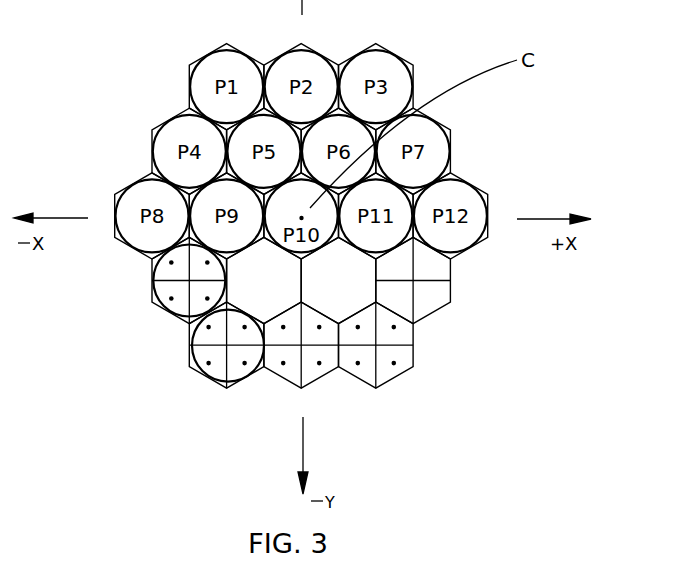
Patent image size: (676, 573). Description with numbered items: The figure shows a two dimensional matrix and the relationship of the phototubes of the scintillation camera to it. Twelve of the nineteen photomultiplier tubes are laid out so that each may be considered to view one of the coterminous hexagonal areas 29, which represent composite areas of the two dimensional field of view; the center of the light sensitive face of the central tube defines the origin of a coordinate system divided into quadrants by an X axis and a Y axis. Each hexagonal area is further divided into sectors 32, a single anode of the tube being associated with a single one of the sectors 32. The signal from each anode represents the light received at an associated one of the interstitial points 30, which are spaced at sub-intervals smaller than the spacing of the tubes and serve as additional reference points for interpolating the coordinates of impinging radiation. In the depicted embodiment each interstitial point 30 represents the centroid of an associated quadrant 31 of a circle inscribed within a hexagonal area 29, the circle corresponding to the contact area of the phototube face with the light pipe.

The hexagonal areas 29 is at (440, 326).
The interstitial points 30 is at (283, 365).
The quadrant 31 is at (210, 352).
The sectors 32 is at (395, 320).